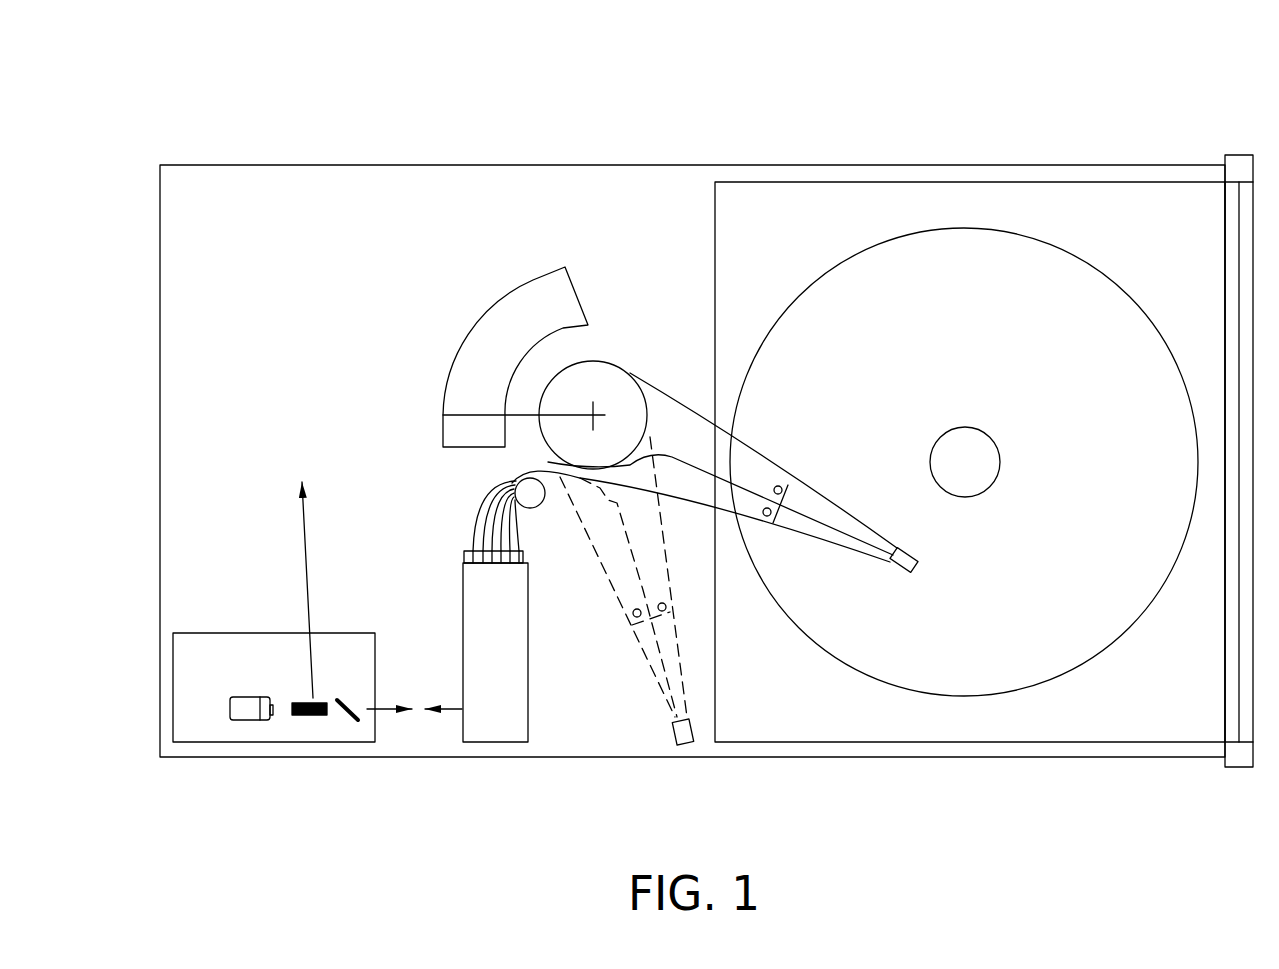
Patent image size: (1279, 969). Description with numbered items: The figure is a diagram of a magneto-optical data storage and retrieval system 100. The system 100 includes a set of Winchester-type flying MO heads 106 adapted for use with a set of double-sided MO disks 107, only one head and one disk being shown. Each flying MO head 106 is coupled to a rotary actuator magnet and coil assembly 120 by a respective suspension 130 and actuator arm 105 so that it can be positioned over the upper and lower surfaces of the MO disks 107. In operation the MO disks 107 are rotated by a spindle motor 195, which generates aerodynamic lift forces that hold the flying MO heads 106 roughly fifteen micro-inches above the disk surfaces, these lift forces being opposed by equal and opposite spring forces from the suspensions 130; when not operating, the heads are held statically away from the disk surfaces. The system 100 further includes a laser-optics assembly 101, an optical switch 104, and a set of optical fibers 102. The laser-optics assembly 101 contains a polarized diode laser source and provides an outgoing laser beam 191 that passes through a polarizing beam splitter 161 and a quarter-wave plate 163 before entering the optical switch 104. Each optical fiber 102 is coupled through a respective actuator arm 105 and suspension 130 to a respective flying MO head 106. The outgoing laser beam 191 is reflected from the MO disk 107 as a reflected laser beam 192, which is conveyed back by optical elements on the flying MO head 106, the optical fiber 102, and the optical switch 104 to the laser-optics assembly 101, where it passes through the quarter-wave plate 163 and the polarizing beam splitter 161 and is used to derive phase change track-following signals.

The magneto-optical data storage and retrieval system 100 is at (923, 118).
The laser-optics assembly 101 is at (210, 715).
The optical fibers 102 is at (475, 498).
The optical switch 104 is at (535, 625).
The actuator arm 105 is at (758, 457).
The flying MO head 106 is at (925, 578).
The MO disk 107 is at (1060, 245).
The rotary actuator magnet and coil assembly 120 is at (593, 415).
The suspension 130 is at (843, 503).
The polarizing beam splitter 161 is at (303, 718).
The quarter-wave plate 163 is at (343, 722).
The outgoing laser beam 191 is at (403, 720).
The reflected laser beam 192 is at (440, 720).
The spindle motor 195 is at (1013, 442).